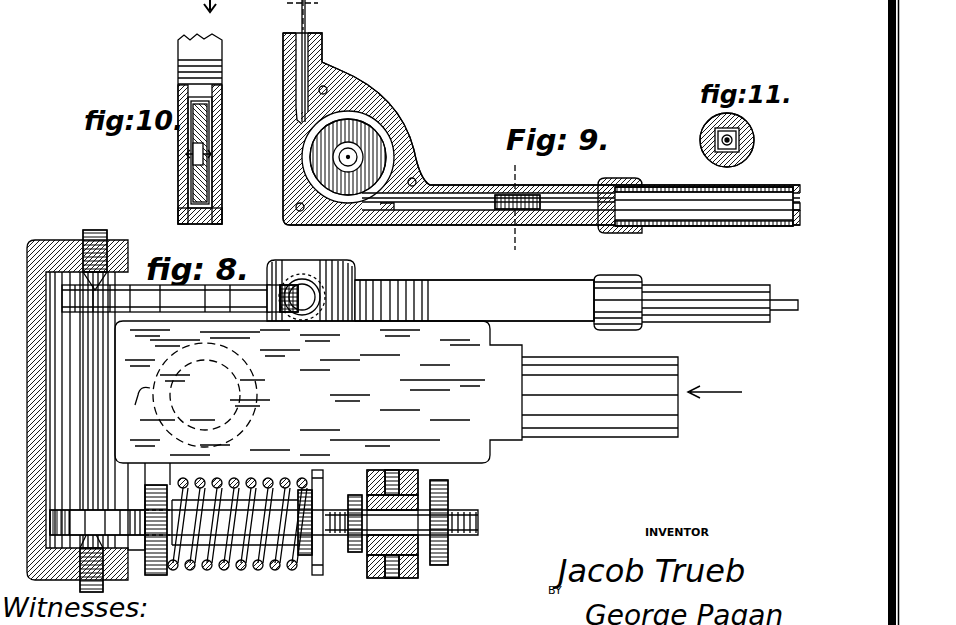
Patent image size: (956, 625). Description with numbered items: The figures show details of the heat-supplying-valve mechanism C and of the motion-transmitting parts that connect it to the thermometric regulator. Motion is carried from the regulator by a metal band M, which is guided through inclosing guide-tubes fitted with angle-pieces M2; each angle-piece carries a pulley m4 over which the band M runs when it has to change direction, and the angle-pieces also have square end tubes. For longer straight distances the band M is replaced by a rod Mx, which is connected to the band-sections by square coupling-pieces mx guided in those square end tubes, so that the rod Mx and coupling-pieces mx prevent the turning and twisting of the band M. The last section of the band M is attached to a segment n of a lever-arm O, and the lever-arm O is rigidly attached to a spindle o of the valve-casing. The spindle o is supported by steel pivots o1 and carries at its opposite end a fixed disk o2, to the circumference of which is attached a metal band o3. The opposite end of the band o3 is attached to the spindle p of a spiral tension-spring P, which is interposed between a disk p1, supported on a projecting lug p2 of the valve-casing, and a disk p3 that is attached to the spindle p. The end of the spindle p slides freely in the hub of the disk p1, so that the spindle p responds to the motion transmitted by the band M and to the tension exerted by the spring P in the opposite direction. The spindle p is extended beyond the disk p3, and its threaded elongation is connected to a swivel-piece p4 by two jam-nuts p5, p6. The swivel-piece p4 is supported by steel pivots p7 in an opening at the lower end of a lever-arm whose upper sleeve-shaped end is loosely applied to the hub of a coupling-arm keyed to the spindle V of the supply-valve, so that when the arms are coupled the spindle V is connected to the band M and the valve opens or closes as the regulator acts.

In FIG. 8, the lever-arm O is at (148, 410).
In FIG. 8, the spindle o is at (82, 410).
In FIG. 8, the steel pivots o1 is at (102, 406).
In FIG. 8, the fixed disk o2 is at (107, 522).
In FIG. 8, the metal band o3 is at (58, 512).
In FIG. 8, the segment n is at (266, 300).
In FIG. 9, the metal band M is at (308, 32).
In FIG. 8, the metal band M is at (298, 292).
In FIG. 10, the angle-pieces M2 is at (180, 190).
In FIG. 9, the angle-pieces M2 is at (388, 112).
In FIG. 8, the angle-pieces M2 is at (474, 300).
In FIG. 9, the rod Mx is at (733, 215).
In FIG. 11, the rod Mx is at (710, 146).
In FIG. 8, the rod Mx is at (785, 300).
In FIG. 10, the pulleys m4 is at (206, 130).
In FIG. 9, the pulleys m4 is at (358, 157).
In FIG. 11, the square coupling-pieces mx is at (745, 140).
In FIG. 8, the heat-supplying-valve mechanism C is at (140, 395).
In FIG. 8, the spindle of the supply-valve V is at (428, 392).
In FIG. 8, the spindle p is at (478, 522).
In FIG. 8, the disk p1 is at (237, 538).
In FIG. 8, the projecting lug p2 is at (149, 531).
In FIG. 8, the disk p3 is at (332, 556).
In FIG. 8, the swivel-piece p4 is at (418, 500).
In FIG. 8, the jam-nut p5 is at (355, 555).
In FIG. 8, the jam-nut p6 is at (444, 560).
In FIG. 8, the steel pivots p7 is at (392, 470).
In FIG. 8, the spiral tension-spring P is at (235, 550).